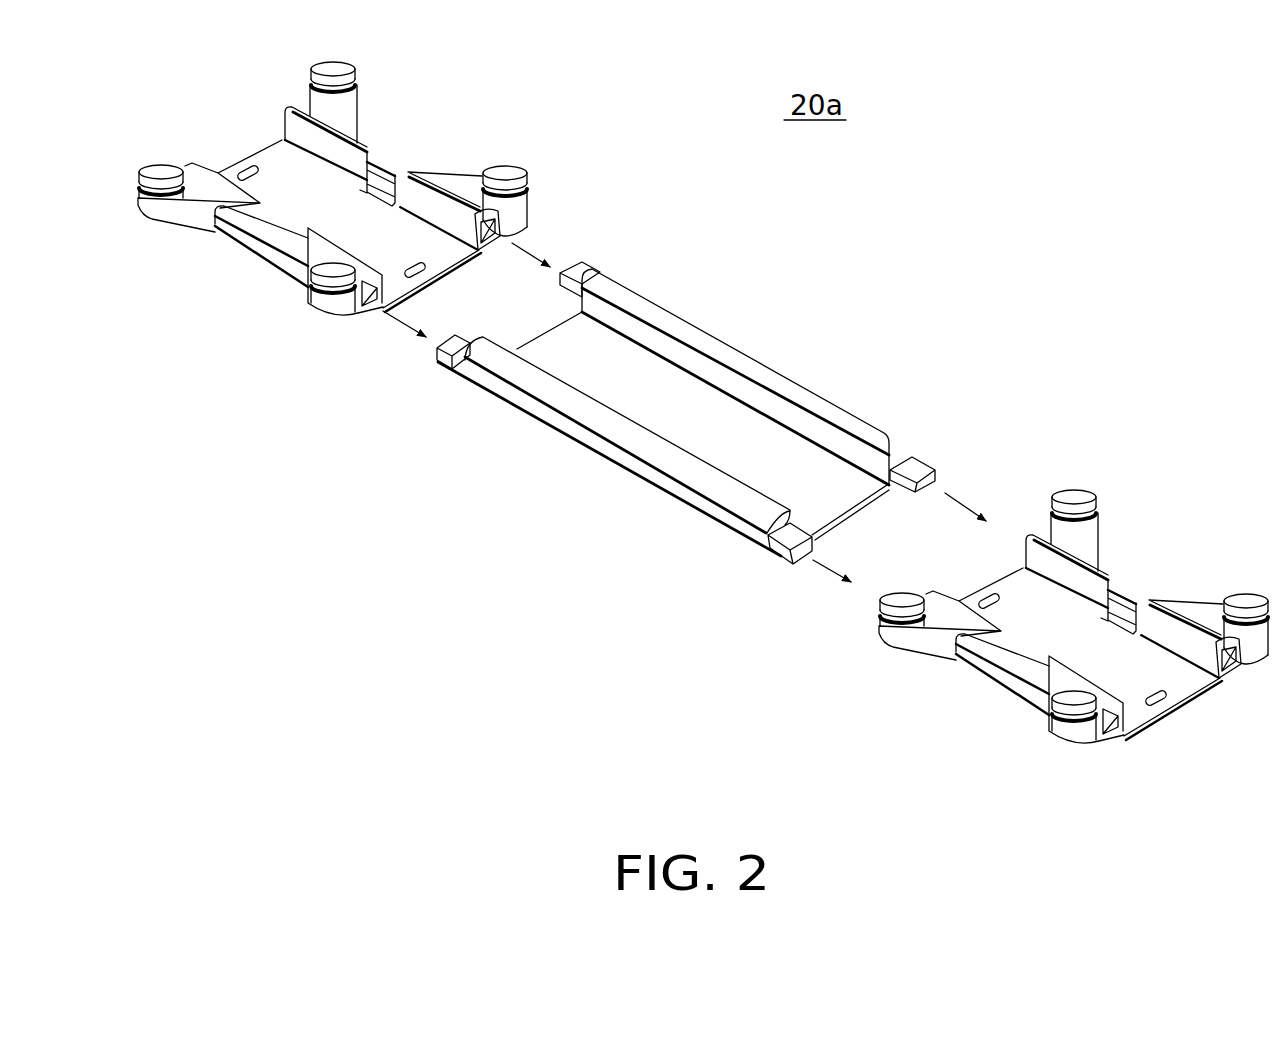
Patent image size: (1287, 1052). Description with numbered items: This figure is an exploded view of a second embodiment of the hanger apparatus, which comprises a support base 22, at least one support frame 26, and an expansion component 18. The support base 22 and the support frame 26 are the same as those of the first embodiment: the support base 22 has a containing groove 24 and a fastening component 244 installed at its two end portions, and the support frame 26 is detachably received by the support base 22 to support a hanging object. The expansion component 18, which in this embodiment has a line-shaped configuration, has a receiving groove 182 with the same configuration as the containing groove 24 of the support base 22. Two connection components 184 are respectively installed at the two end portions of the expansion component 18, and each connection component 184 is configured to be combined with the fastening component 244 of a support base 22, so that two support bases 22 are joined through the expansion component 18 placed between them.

The expansion component 18 is at (702, 396).
The receiving groove 182 is at (727, 420).
The connection component 184 is at (582, 265).
The support base 22 is at (370, 184).
The containing groove 24 is at (277, 175).
The support frame 26 is at (183, 228).
The fastening component 244 is at (503, 237).